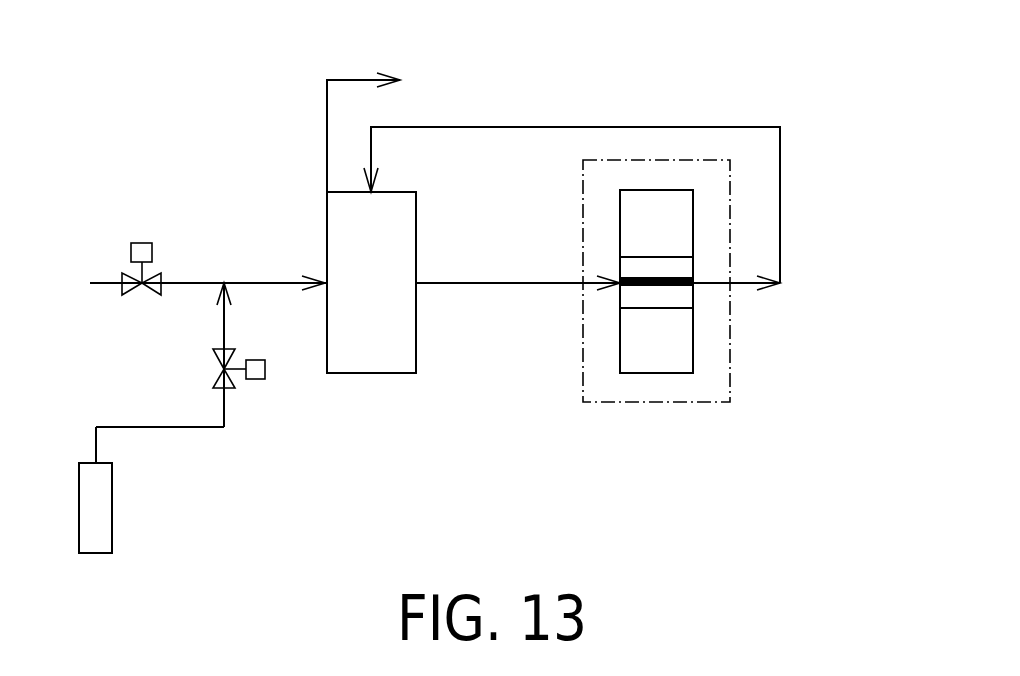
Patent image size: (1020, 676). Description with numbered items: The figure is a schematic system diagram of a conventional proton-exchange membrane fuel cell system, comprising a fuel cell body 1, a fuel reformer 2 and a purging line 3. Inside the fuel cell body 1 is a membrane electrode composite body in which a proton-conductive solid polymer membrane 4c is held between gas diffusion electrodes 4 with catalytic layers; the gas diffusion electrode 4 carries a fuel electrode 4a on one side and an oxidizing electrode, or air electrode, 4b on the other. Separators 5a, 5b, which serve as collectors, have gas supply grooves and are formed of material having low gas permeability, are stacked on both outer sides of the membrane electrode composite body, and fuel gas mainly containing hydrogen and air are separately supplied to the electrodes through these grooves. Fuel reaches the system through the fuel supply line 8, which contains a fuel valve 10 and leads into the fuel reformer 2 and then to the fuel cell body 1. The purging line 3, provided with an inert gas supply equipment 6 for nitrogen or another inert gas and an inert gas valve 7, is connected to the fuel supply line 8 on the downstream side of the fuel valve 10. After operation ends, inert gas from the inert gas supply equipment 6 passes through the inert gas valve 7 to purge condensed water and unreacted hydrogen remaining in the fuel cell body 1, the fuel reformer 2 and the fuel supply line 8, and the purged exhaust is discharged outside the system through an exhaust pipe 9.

The fuel cell body 1 is at (605, 403).
The fuel reformer 2 is at (375, 375).
The purging line 3 is at (100, 410).
The gas diffusion electrode 4 is at (751, 337).
The fuel electrode 4a is at (677, 298).
The oxidizing electrode 4b is at (683, 265).
The proton-conductive solid polymer membrane 4c is at (695, 287).
The separator 5a is at (680, 375).
The separator 5b is at (655, 190).
The inert gas supply equipment 6 is at (80, 502).
The inert gas valve 7 is at (255, 360).
The fuel supply line 8 is at (480, 282).
The exhaust pipe 9 is at (345, 78).
The fuel valve 10 is at (145, 242).